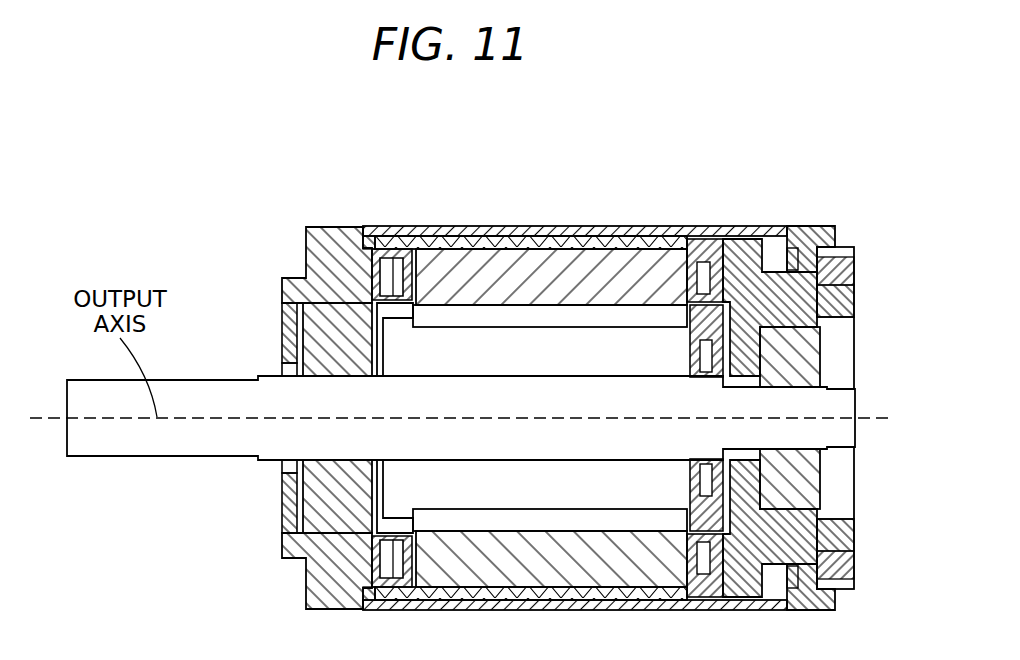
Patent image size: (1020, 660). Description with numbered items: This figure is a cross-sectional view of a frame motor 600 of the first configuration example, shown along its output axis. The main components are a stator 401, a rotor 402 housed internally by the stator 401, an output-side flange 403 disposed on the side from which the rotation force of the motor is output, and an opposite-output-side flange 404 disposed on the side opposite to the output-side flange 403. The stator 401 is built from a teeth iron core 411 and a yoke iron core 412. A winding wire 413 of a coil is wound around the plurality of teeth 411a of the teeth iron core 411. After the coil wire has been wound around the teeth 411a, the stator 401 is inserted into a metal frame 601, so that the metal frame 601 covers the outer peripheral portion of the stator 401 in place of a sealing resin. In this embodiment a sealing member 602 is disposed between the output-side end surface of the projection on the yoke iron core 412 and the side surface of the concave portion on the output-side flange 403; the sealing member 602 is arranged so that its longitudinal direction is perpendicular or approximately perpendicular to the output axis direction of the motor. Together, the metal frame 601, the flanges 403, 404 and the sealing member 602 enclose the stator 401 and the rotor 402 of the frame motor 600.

The frame motor 600 is at (683, 179).
The metal frame 601 is at (627, 232).
The sealing member 602 is at (367, 240).
The stator 401 is at (570, 268).
The rotor 402 is at (332, 437).
The output-side flange 403 is at (323, 253).
The opposite-output-side flange 404 is at (815, 241).
The teeth iron core 411 is at (497, 268).
The teeth 411a is at (432, 263).
The yoke iron core 412 is at (450, 243).
The winding wire 413 is at (397, 273).